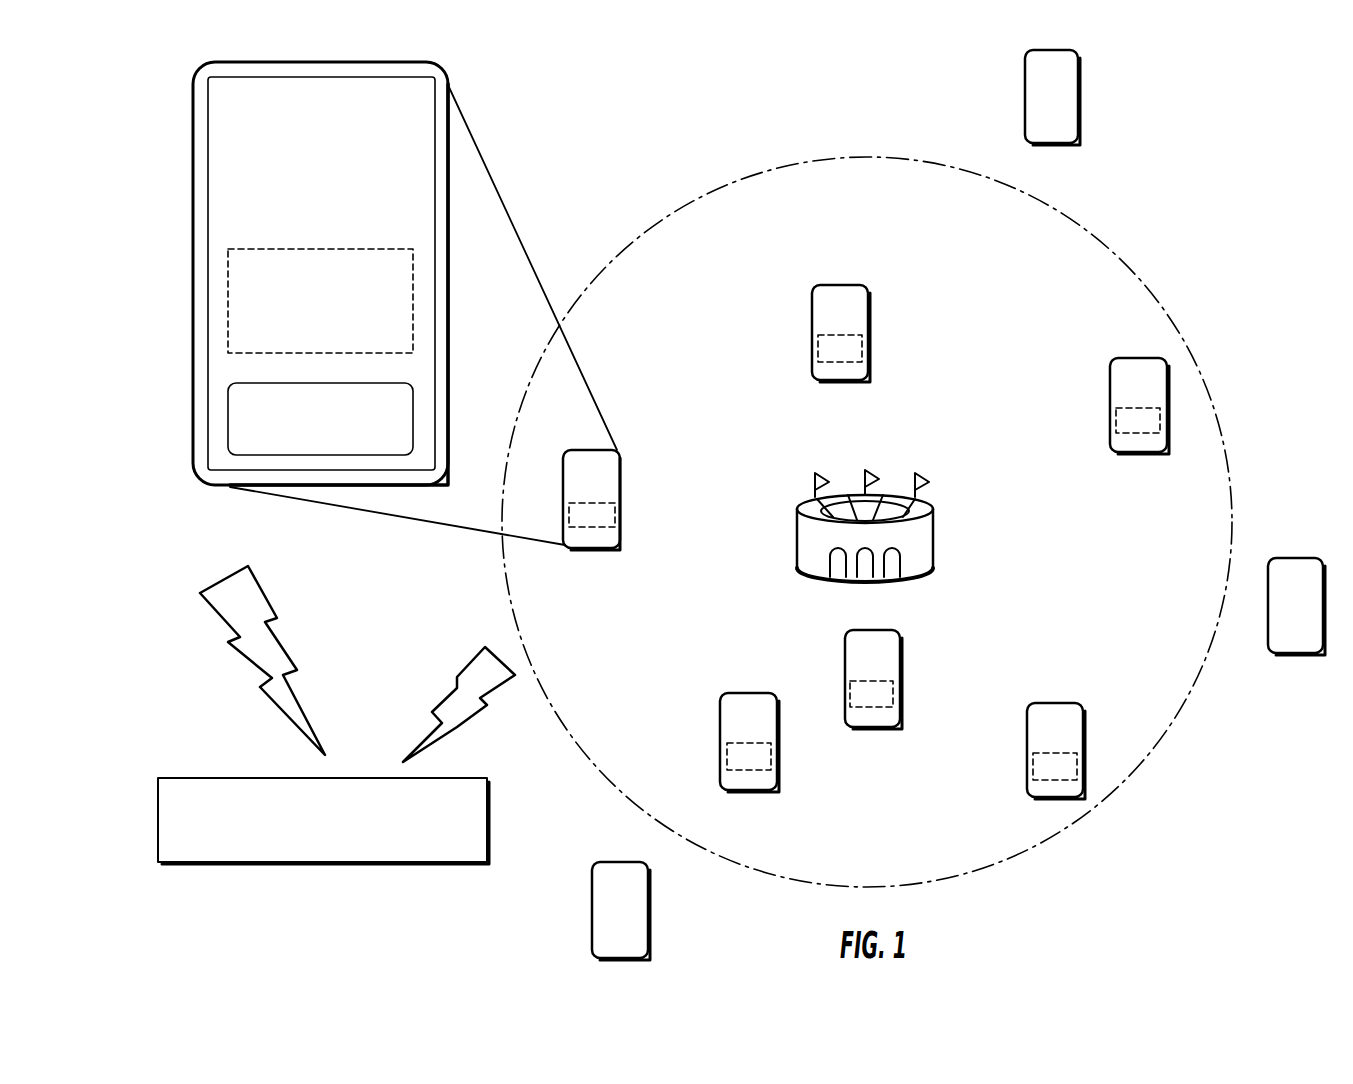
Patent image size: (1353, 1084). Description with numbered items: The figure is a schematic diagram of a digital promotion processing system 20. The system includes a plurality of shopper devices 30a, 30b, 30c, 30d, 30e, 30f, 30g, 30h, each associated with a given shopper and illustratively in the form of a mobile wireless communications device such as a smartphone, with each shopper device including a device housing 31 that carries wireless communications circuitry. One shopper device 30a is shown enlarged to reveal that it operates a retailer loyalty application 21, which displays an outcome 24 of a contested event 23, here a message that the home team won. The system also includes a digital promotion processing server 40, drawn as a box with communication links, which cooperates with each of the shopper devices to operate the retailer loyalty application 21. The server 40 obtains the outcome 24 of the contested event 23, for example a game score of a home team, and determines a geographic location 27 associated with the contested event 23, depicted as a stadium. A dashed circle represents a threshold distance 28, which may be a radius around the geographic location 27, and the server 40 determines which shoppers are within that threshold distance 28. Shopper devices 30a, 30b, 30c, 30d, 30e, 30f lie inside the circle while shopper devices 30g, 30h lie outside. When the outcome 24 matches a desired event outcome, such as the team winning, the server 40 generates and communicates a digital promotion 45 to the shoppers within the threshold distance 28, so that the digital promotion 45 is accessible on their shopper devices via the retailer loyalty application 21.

The digital promotion processing system 20 is at (624, 84).
The retailer loyalty application 21 is at (257, 125).
The contested event 23 is at (932, 598).
The outcome of the contested event 24 is at (245, 193).
The geographic location 27 is at (937, 543).
The threshold distance 28 is at (845, 158).
The shopper device 30a is at (184, 119).
The shopper device 30b is at (812, 318).
The shopper device 30c is at (1048, 703).
The shopper device 30d is at (1132, 358).
The shopper device 30e is at (720, 732).
The shopper device 30f is at (900, 705).
The shopper device 30g is at (592, 910).
The shopper device 30h is at (1080, 100).
The device housing 31 is at (193, 310).
The digital promotion processing server 40 is at (256, 870).
The digital promotion 45 is at (227, 330).